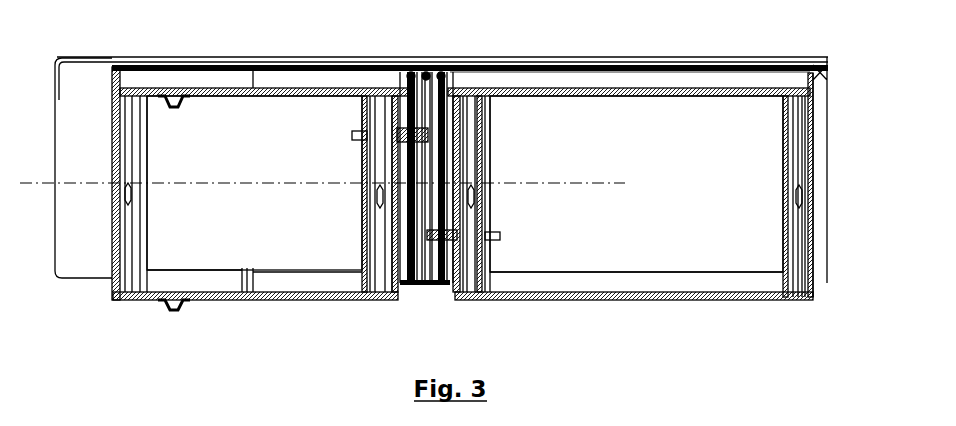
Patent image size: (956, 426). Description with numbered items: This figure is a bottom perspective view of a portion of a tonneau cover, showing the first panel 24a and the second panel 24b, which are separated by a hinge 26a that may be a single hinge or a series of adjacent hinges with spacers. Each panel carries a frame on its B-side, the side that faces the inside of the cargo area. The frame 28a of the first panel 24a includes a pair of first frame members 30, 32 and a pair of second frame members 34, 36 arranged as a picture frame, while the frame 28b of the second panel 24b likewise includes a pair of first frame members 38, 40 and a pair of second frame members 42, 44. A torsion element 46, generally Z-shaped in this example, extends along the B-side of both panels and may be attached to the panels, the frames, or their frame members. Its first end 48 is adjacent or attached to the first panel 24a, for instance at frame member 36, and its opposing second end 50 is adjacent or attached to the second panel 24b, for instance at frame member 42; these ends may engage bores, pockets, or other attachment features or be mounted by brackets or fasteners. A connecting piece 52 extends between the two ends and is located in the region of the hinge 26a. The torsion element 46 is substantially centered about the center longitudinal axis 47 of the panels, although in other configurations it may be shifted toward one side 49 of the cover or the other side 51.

The first panel 24a is at (242, 152).
The second panel 24b is at (677, 147).
The hinge 26a is at (431, 245).
The frame 28a is at (277, 306).
The frame 28b is at (620, 306).
The first frame member 30 is at (337, 280).
The first frame member 32 is at (332, 80).
The second frame member 34 is at (127, 143).
The second frame member 36 is at (384, 104).
The first frame member 38 is at (590, 280).
The first frame member 40 is at (601, 77).
The second frame member 42 is at (474, 104).
The second frame member 44 is at (807, 118).
The torsion element 46 is at (425, 218).
The center longitudinal axis 47 is at (36, 186).
The first end 48 is at (359, 130).
The side 49 is at (714, 76).
The second end 50 is at (492, 240).
The side 51 is at (738, 292).
The connecting piece 52 is at (427, 173).